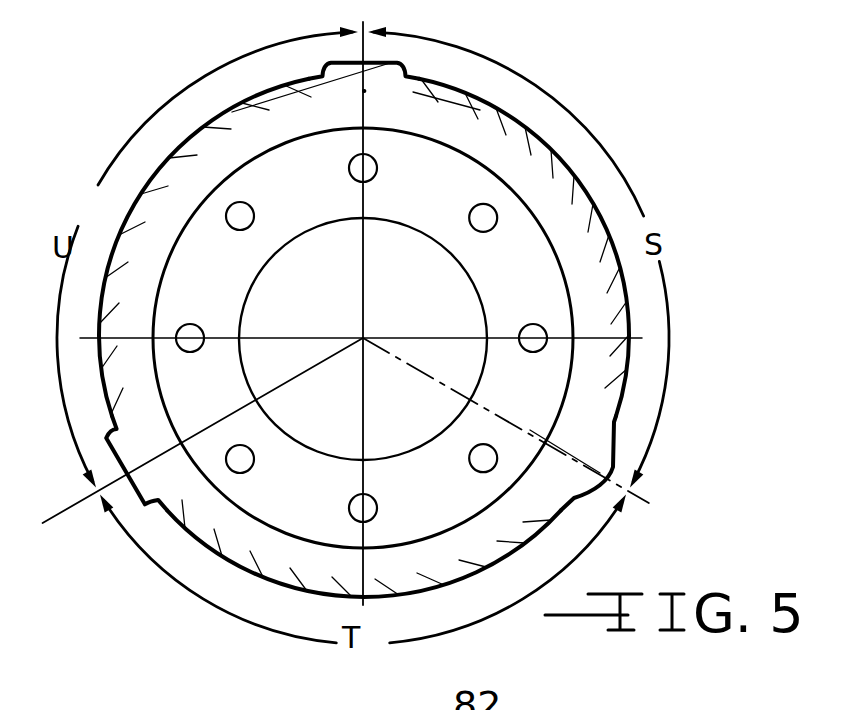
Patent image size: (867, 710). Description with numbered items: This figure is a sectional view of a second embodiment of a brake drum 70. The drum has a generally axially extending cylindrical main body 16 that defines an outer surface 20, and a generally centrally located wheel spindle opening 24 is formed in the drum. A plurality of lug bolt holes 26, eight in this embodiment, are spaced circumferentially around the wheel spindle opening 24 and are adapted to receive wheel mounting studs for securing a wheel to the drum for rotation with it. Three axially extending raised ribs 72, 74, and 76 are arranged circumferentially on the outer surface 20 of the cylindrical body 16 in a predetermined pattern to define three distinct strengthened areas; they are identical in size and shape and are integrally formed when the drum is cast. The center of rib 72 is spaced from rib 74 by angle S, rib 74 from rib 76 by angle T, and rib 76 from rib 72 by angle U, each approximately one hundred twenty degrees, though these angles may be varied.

The cylindrical main body 16 is at (624, 285).
The outer surface 20 is at (630, 348).
The wheel spindle opening 24 is at (334, 457).
The lug bolt holes 26 is at (352, 177).
The brake drum 70 is at (607, 88).
The raised rib 72 is at (390, 60).
The raised rib 74 is at (614, 458).
The raised rib 76 is at (140, 508).